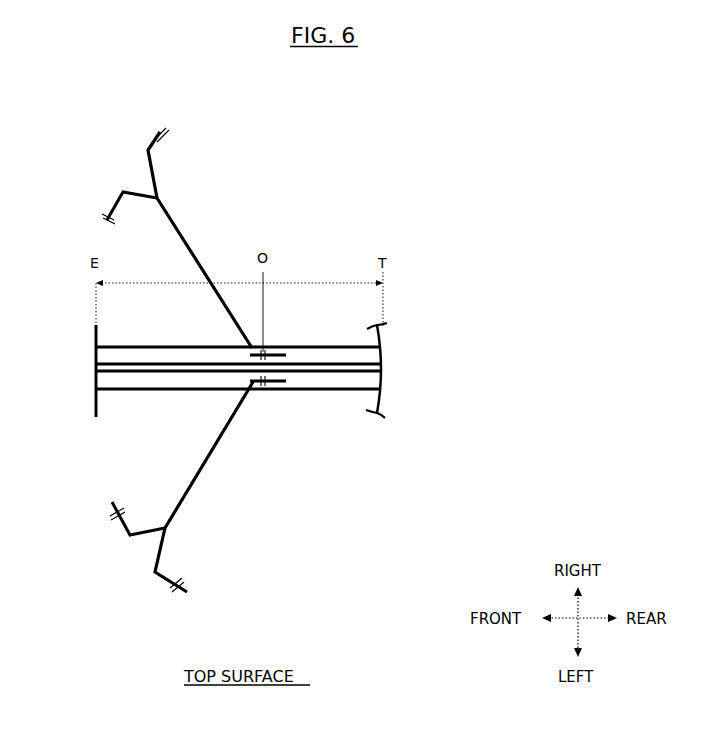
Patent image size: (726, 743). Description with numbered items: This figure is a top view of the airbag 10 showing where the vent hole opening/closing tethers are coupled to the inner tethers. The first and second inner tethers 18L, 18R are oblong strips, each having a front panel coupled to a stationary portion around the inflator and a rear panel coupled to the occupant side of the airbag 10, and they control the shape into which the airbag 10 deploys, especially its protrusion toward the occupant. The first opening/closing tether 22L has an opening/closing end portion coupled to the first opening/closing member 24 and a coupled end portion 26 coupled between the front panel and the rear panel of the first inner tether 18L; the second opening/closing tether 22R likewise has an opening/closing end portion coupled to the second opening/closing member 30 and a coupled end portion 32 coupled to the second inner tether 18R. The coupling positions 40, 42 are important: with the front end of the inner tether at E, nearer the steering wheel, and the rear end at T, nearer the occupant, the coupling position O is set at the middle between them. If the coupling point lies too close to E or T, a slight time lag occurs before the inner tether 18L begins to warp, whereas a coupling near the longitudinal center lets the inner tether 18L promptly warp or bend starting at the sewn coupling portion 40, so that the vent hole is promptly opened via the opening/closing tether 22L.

The airbag 10 is at (380, 402).
The second inner tether 18R is at (383, 357).
The first inner tether 18L is at (383, 373).
The second opening/closing tether 22R is at (178, 223).
The first opening/closing tether 22L is at (207, 465).
The first opening/closing member 24 is at (137, 536).
The coupled end portion 26 is at (280, 387).
The second opening/closing member 30 is at (148, 168).
The coupled end portion 32 is at (296, 347).
The coupling position 40 is at (263, 386).
The coupling position 42 is at (256, 347).